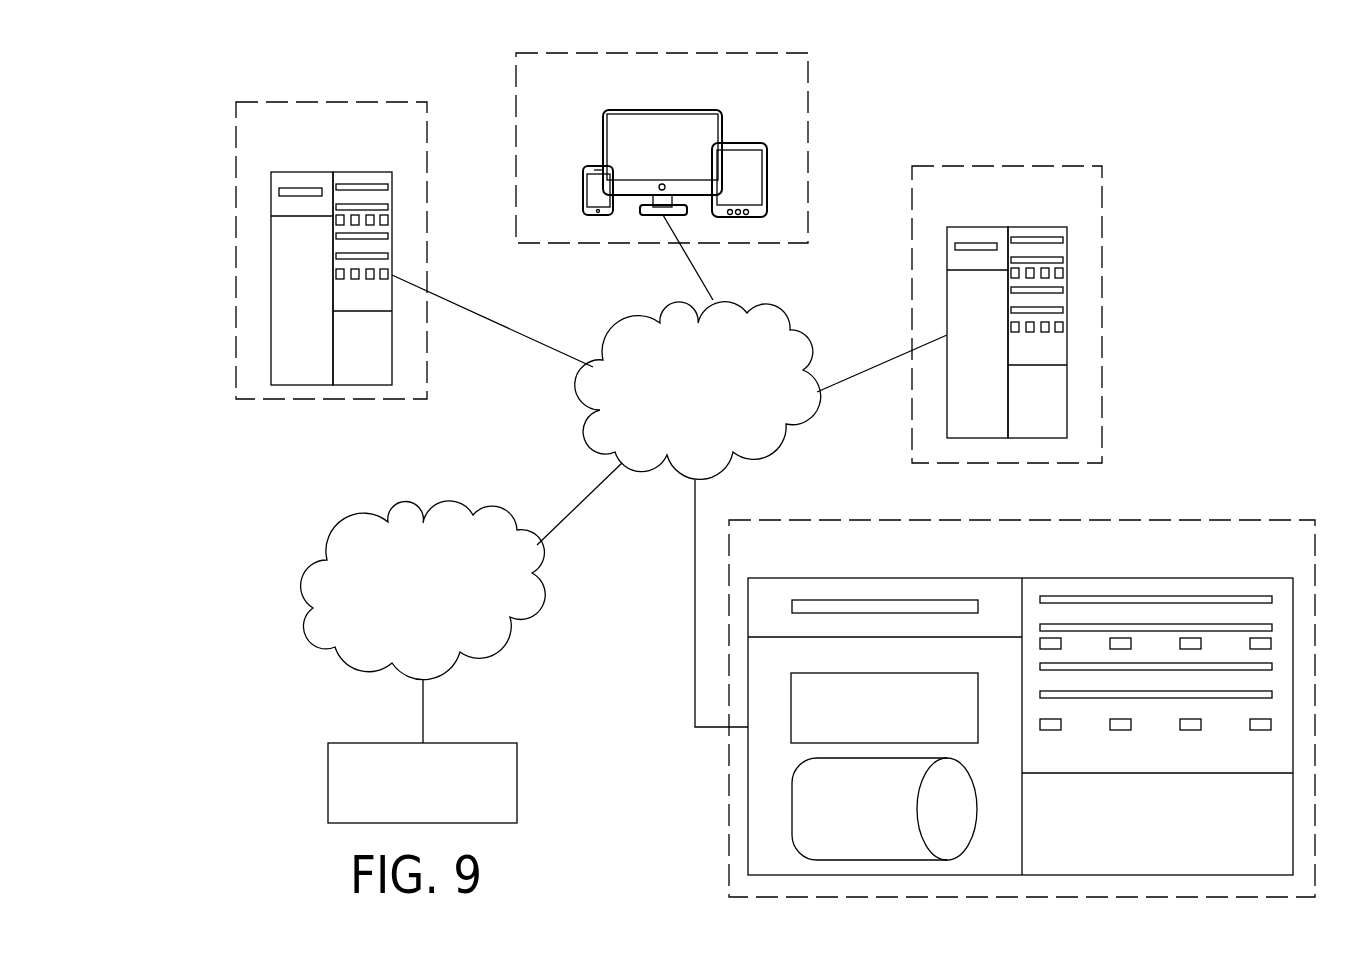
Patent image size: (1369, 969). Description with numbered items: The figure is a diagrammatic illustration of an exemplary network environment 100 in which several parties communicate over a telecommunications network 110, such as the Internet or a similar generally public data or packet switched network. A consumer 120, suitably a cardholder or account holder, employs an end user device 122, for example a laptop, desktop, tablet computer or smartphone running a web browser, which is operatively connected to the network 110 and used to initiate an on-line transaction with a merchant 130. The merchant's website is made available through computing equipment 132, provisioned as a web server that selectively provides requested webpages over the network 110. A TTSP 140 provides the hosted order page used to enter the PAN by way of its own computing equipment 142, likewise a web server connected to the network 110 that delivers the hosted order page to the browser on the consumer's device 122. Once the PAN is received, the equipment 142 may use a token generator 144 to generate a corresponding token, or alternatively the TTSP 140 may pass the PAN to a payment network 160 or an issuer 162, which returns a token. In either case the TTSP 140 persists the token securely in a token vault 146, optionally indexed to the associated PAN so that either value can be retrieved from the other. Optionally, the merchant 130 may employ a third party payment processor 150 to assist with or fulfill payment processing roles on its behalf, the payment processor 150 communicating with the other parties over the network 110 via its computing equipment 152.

The network environment 100 is at (1130, 99).
The telecommunications network 110 is at (785, 315).
The consumer 120 is at (808, 73).
The end user device 122 is at (767, 140).
The merchant 130 is at (1102, 213).
The merchant equipment 132 is at (1067, 290).
The TTSP 140 is at (1121, 519).
The TTSP equipment 142 is at (1175, 836).
The token generator 144 is at (803, 743).
The token vault 146 is at (960, 803).
The payment processor 150 is at (236, 172).
The payment processor equipment 152 is at (271, 250).
The payment network 160 is at (328, 540).
The issuer 162 is at (328, 783).